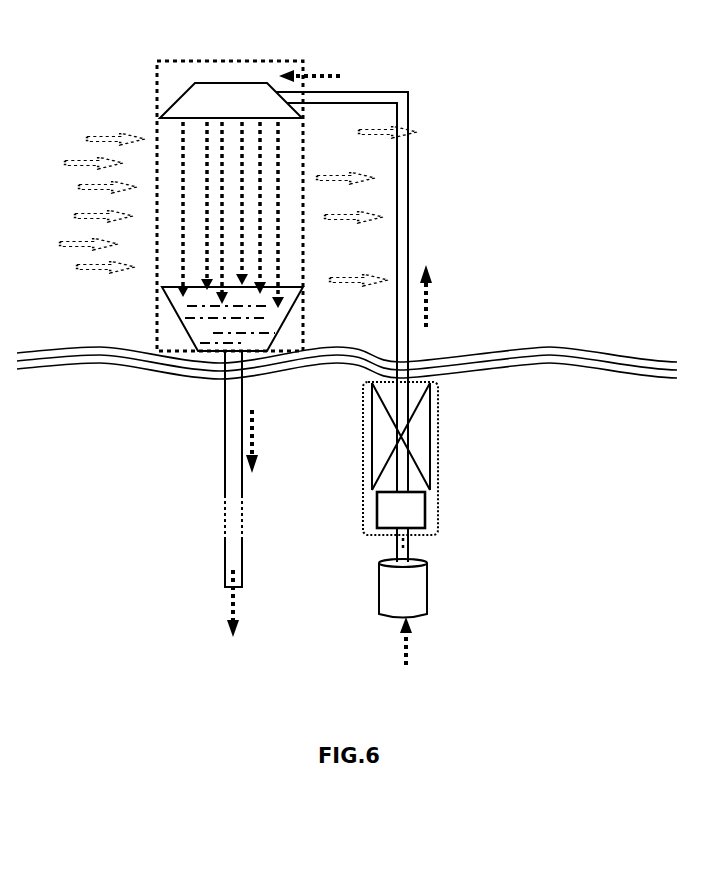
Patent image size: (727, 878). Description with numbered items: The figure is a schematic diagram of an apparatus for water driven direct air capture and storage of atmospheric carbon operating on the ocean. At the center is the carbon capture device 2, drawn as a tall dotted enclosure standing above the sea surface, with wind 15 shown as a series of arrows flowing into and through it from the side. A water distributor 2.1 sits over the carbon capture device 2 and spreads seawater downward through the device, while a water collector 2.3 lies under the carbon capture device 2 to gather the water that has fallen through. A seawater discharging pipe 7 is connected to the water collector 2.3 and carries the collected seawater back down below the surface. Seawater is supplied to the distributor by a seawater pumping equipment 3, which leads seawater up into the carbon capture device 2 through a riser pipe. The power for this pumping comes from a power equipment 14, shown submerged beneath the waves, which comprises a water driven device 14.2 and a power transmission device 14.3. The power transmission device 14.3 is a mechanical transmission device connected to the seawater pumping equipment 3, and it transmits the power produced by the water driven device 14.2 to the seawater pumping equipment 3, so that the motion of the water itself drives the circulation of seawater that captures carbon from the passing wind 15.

The carbon capture device 2 is at (165, 70).
The water distributor 2.1 is at (200, 97).
The water collector 2.3 is at (193, 327).
The seawater discharging pipe 7 is at (233, 431).
The power equipment 14 is at (404, 458).
The water driven device 14.2 is at (427, 443).
The power transmission device 14.3 is at (420, 522).
The seawater pumping equipment 3 is at (420, 593).
The wind 15 is at (90, 162).